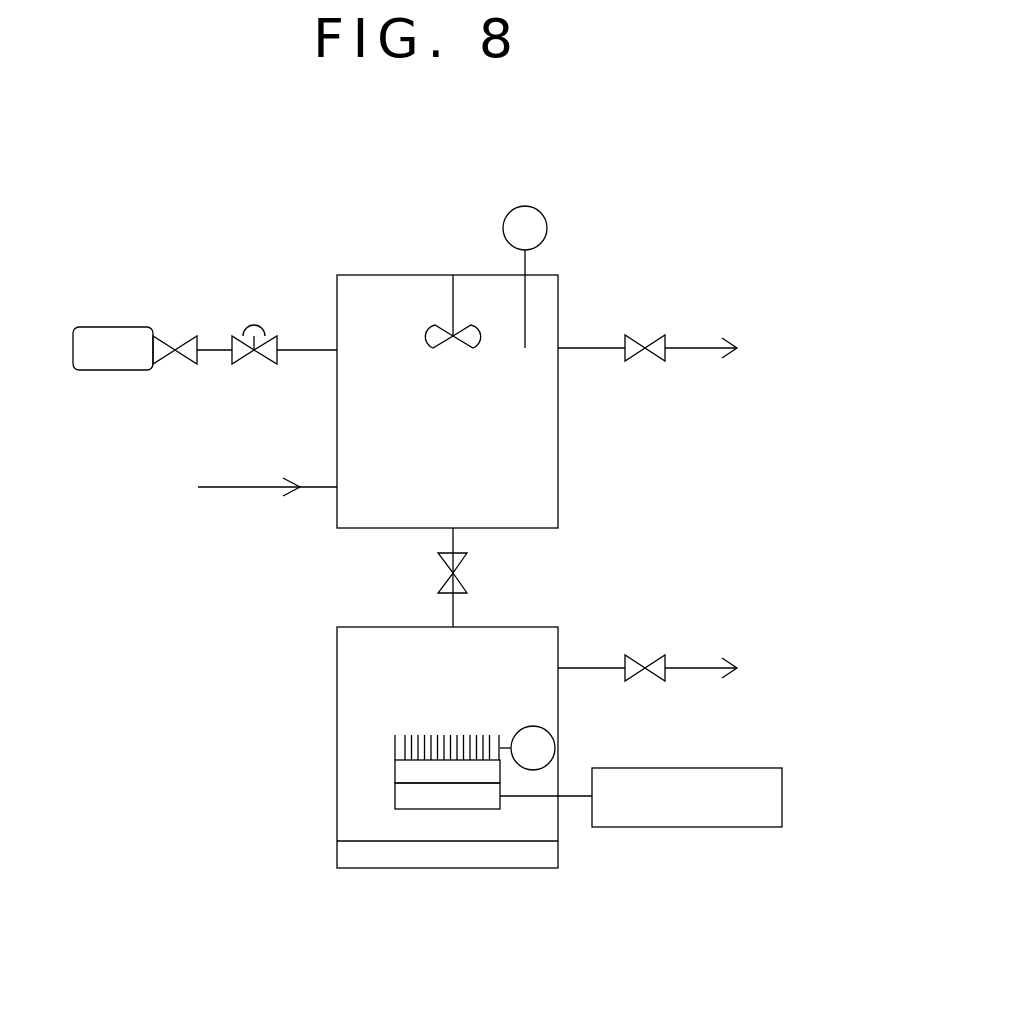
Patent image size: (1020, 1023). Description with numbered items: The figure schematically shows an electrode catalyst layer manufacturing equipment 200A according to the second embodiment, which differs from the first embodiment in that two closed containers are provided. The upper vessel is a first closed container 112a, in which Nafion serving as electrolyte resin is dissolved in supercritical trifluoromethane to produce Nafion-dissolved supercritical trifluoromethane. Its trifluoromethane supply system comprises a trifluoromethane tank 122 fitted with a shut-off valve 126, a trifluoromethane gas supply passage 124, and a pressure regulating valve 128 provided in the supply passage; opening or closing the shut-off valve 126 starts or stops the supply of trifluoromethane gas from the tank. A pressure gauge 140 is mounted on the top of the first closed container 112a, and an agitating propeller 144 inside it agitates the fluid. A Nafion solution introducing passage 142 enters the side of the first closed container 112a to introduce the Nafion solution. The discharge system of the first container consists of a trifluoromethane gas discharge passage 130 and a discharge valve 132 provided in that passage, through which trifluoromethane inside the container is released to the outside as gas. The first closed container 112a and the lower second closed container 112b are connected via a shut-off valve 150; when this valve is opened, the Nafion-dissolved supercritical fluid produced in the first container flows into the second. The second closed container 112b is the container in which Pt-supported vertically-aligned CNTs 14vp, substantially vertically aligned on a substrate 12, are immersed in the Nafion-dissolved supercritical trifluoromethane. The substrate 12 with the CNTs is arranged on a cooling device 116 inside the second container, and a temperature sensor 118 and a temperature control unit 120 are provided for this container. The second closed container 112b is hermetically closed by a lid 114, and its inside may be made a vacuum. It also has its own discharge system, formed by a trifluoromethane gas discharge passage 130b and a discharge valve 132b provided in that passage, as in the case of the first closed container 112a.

The electrode catalyst layer manufacturing equipment 200A is at (697, 198).
The trifluoromethane tank 122 is at (113, 370).
The shut-off valve 126 is at (173, 348).
The pressure regulating valve 128 is at (254, 352).
The trifluoromethane gas supply passage 124 is at (303, 350).
The first closed container 112a is at (558, 452).
The pressure gauge 140 is at (547, 228).
The agitating propeller 144 is at (432, 341).
The trifluoromethane gas discharge passage 130 is at (598, 350).
The discharge valve 132 is at (645, 352).
The Nafion solution introducing passage 142 is at (243, 490).
The shut-off valve 150 is at (460, 573).
The second closed container 112b is at (558, 633).
The trifluoromethane gas discharge passage 130b is at (598, 670).
The discharge valve 132b is at (645, 672).
The temperature control unit 120 is at (733, 768).
The lid 114 is at (548, 852).
The temperature sensor 118 is at (536, 727).
The Pt-supported vertically-aligned CNTs 14vp is at (395, 745).
The substrate 12 is at (395, 771).
The cooling device 116 is at (395, 796).